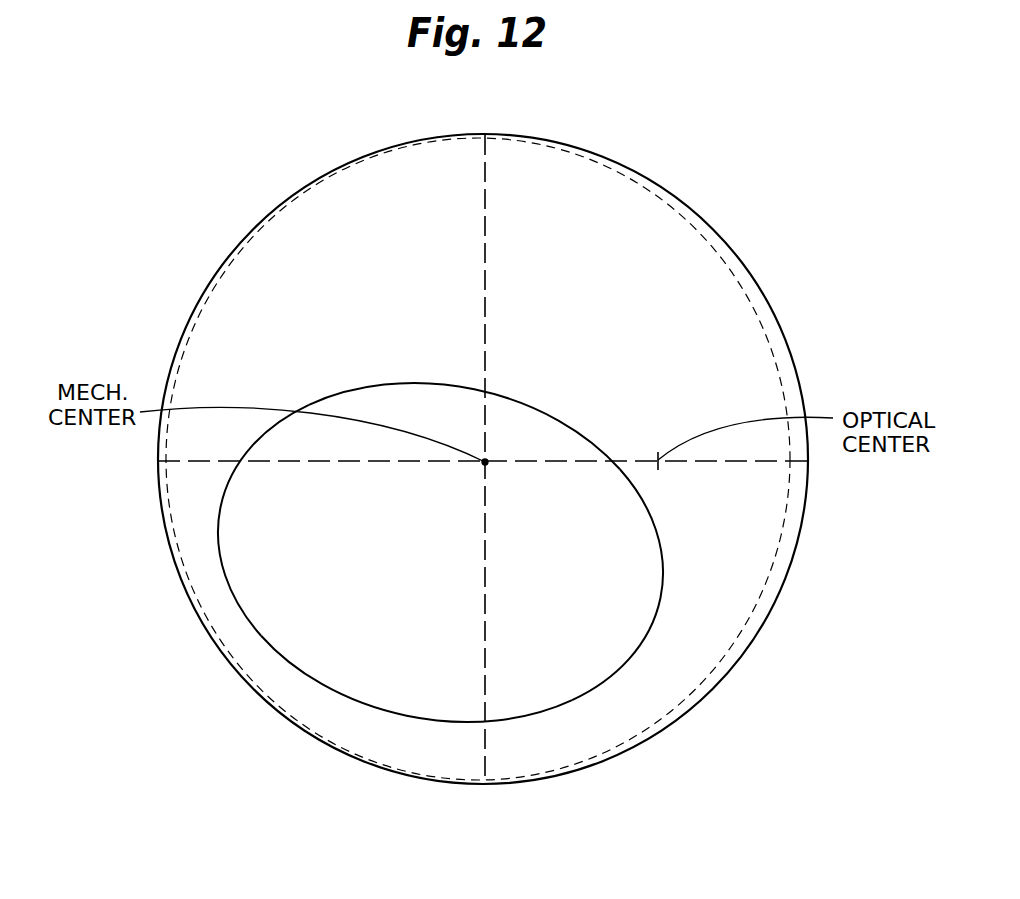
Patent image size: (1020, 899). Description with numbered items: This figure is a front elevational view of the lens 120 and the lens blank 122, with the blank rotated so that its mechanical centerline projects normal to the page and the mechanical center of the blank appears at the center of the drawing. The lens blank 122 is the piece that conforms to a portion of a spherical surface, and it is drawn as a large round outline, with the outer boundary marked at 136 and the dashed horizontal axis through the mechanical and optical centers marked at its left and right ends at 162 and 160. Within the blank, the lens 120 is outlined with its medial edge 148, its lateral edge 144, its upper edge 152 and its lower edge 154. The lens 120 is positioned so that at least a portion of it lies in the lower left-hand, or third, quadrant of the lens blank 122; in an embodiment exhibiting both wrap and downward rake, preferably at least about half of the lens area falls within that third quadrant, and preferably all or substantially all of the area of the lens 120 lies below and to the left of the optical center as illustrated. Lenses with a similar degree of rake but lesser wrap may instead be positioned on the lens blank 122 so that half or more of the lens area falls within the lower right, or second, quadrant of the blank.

The lens 120 is at (432, 579).
The lens blank 122 is at (595, 290).
The peripheral edge of lens blank 136 is at (668, 250).
The lateral edge 144 is at (218, 559).
The medial edge 148 is at (663, 555).
The upper edge 152 is at (382, 385).
The lower edge 154 is at (437, 723).
The right alignment mark on horizontal axis 160 is at (808, 461).
The left alignment mark on horizontal axis 162 is at (153, 463).